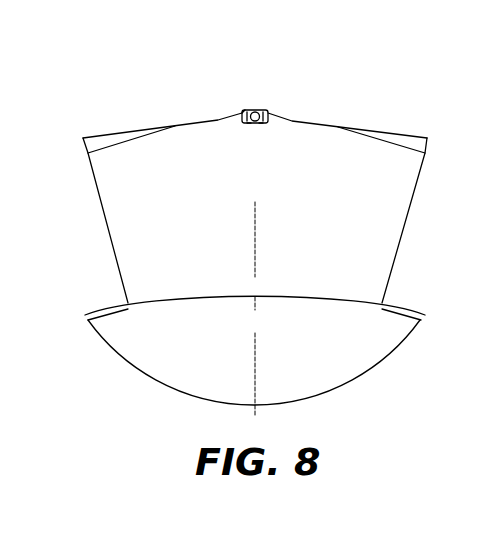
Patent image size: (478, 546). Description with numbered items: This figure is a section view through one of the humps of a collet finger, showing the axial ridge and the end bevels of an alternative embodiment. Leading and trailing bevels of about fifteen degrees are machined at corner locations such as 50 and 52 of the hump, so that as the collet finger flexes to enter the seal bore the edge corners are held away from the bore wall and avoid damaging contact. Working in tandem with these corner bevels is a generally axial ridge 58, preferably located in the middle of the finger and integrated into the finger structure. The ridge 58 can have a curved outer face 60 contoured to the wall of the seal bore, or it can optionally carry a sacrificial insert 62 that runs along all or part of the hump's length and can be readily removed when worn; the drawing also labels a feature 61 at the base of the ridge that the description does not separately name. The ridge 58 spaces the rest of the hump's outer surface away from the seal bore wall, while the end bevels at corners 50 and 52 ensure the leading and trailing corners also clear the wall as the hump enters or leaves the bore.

The corner location 50 is at (401, 140).
The corner location 52 is at (110, 143).
The generally axial ridge 58 is at (270, 108).
The curved outer face 60 is at (245, 110).
The lower left connection 61 is at (249, 123).
The sacrificial insert 62 is at (261, 123).